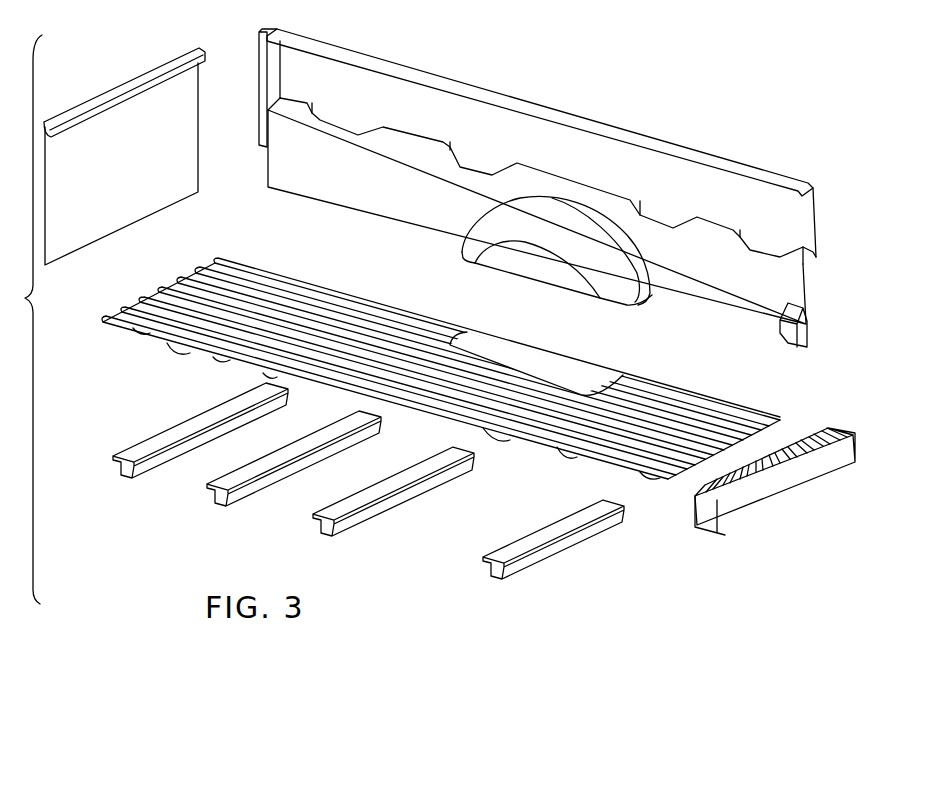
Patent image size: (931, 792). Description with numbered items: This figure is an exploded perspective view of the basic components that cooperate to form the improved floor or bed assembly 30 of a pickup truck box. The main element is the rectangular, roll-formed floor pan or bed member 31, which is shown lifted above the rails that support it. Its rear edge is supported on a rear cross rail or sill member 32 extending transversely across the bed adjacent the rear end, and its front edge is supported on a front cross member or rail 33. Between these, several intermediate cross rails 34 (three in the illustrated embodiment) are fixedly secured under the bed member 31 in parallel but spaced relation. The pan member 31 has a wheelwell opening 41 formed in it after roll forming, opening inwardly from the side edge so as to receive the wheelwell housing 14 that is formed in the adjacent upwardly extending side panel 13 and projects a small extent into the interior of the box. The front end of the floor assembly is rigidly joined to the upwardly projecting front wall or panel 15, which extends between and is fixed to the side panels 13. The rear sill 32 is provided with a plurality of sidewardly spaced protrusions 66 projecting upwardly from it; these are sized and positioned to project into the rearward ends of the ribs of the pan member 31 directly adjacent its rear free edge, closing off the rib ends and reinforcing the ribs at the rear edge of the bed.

The side panel 13 is at (677, 178).
The wheelwell housing 14 is at (533, 217).
The front wall or panel 15 is at (94, 222).
The floor or bed assembly 30 is at (478, 467).
The main floor pan or bed member 31 is at (377, 289).
The rear cross rail or sill member 32 is at (755, 476).
The front cross member or rail 33 is at (158, 440).
The intermediate cross rail 34 is at (240, 495).
The wheelwell opening 41 is at (589, 380).
The protrusion 66 is at (828, 440).